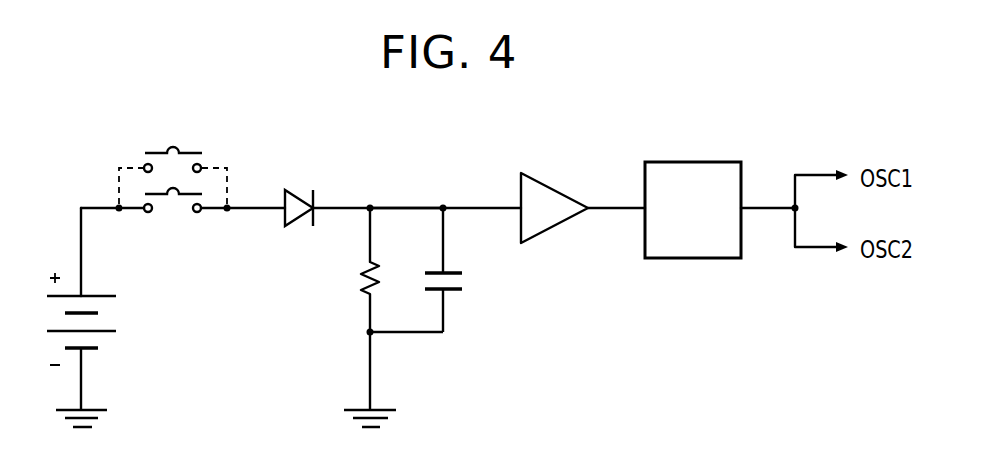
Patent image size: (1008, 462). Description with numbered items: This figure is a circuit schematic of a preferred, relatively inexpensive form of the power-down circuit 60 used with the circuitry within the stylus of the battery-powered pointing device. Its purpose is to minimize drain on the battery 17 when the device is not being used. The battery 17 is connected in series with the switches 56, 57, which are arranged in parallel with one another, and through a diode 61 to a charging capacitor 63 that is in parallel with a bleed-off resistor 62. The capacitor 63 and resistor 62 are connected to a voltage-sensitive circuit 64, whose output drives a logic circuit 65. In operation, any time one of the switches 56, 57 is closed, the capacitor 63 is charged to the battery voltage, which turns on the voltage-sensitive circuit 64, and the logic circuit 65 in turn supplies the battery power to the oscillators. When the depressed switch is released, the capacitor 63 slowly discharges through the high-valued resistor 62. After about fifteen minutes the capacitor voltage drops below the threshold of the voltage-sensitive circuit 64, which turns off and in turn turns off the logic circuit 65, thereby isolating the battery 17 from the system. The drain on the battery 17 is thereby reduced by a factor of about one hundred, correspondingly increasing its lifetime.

The battery 17 is at (116, 331).
The switch 56 is at (175, 197).
The switch 57 is at (183, 153).
The power-down circuit 60 is at (405, 177).
The diode 61 is at (297, 217).
The bleed-off resistor 62 is at (360, 285).
The charging capacitor 63 is at (453, 289).
The voltage-sensitive circuit 64 is at (542, 232).
The logic circuit 65 is at (688, 258).